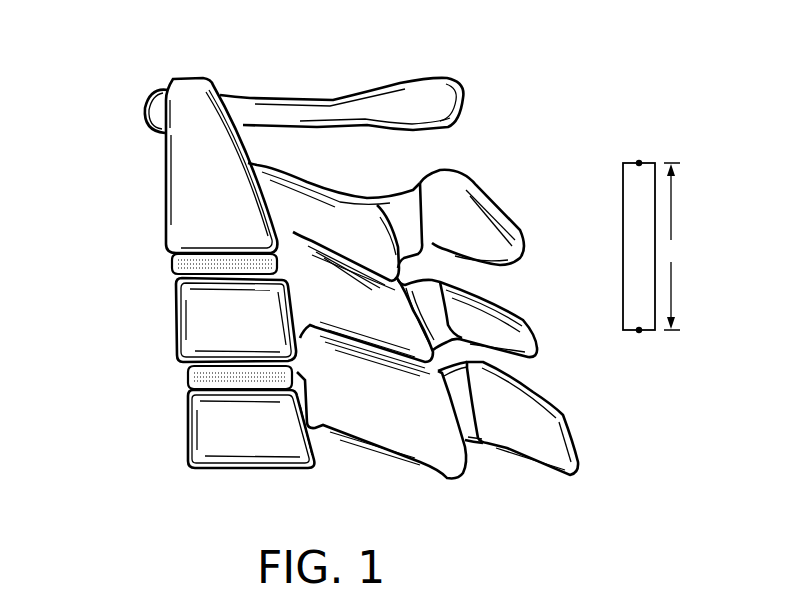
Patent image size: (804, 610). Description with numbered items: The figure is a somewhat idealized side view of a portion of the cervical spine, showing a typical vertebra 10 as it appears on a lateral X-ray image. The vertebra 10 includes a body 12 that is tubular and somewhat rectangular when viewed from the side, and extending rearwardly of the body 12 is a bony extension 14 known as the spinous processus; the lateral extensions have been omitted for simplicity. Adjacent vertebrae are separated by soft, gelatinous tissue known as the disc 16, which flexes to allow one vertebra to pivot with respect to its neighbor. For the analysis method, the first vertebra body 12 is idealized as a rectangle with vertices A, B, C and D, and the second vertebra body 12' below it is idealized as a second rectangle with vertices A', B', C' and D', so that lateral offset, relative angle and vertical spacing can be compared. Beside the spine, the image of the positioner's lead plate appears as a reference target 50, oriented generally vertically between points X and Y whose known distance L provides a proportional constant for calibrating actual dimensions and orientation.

The vertebra 10 is at (112, 327).
The body 12 is at (204, 320).
The second vertebra body 12' is at (331, 407).
The bony extension 14 is at (483, 327).
The disc 16 is at (194, 379).
The reference target 50 is at (623, 217).